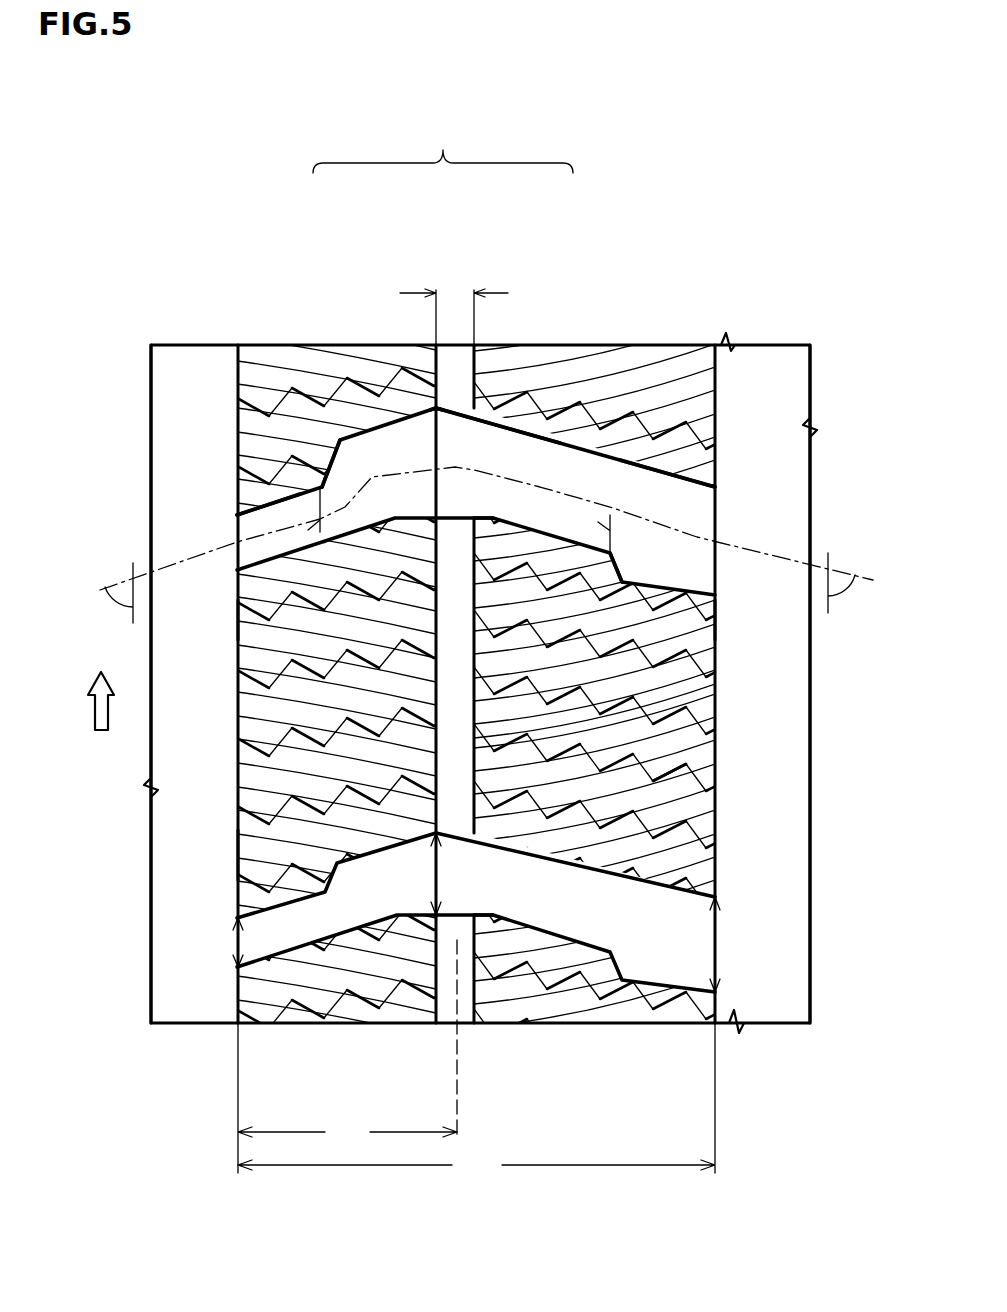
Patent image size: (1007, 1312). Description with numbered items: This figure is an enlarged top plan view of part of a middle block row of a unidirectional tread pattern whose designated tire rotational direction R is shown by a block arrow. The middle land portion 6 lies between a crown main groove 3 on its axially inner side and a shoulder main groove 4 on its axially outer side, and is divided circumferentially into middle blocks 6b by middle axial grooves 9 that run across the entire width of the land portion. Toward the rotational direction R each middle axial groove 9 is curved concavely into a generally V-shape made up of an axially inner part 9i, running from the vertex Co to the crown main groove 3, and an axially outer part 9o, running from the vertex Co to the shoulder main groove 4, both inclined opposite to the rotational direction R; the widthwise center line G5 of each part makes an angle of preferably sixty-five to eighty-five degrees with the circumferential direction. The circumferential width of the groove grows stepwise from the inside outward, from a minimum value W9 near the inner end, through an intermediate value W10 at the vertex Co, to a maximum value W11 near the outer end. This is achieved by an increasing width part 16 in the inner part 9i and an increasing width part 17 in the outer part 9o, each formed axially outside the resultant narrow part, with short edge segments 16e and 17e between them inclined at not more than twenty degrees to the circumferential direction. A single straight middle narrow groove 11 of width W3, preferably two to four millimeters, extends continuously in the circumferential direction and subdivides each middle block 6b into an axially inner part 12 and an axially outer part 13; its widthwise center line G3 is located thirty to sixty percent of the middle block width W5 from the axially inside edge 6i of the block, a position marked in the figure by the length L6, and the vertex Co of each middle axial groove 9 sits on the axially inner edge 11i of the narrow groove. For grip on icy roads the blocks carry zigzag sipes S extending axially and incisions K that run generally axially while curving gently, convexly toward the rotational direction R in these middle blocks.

The crown main groove 3 is at (193, 377).
The shoulder main groove 4 is at (765, 373).
The middle land portion 6 is at (716, 268).
The middle block 6b is at (125, 972).
The axially inside edge of the middle block 6i is at (237, 852).
The middle axial groove 9 is at (527, 456).
The axially inner part of the middle axial groove 9i is at (268, 503).
The axially outer part of the middle axial groove 9o is at (621, 479).
The middle narrow groove 11 is at (476, 392).
The axially inner edge of the middle narrow groove 11i is at (434, 397).
The axially inner part of the middle block 12 is at (375, 563).
The axially outer part of the middle block 13 is at (541, 563).
The increasing width part 16 is at (318, 485).
The short edge segment 16e is at (336, 471).
The increasing width part 17 is at (638, 534).
The short edge segment 17e is at (608, 570).
The vertex of the V-shape Co is at (430, 407).
The widthwise center line of the middle narrow groove G3 is at (460, 1007).
The widthwise center line of the middle axial groove part G5 is at (178, 560).
The incisions K is at (699, 737).
The sipes S is at (690, 780).
The designated tire rotational direction R is at (109, 701).
The groove width of the middle narrow groove W3 is at (454, 305).
The middle block width W5 is at (476, 1100).
The minimum circumferential width of the middle axial groove W9 is at (240, 942).
The intermediate circumferential width of the middle axial groove W10 is at (409, 874).
The maximum circumferential width of the middle axial groove W11 is at (717, 944).
The length of inner block piece L6 is at (347, 1098).